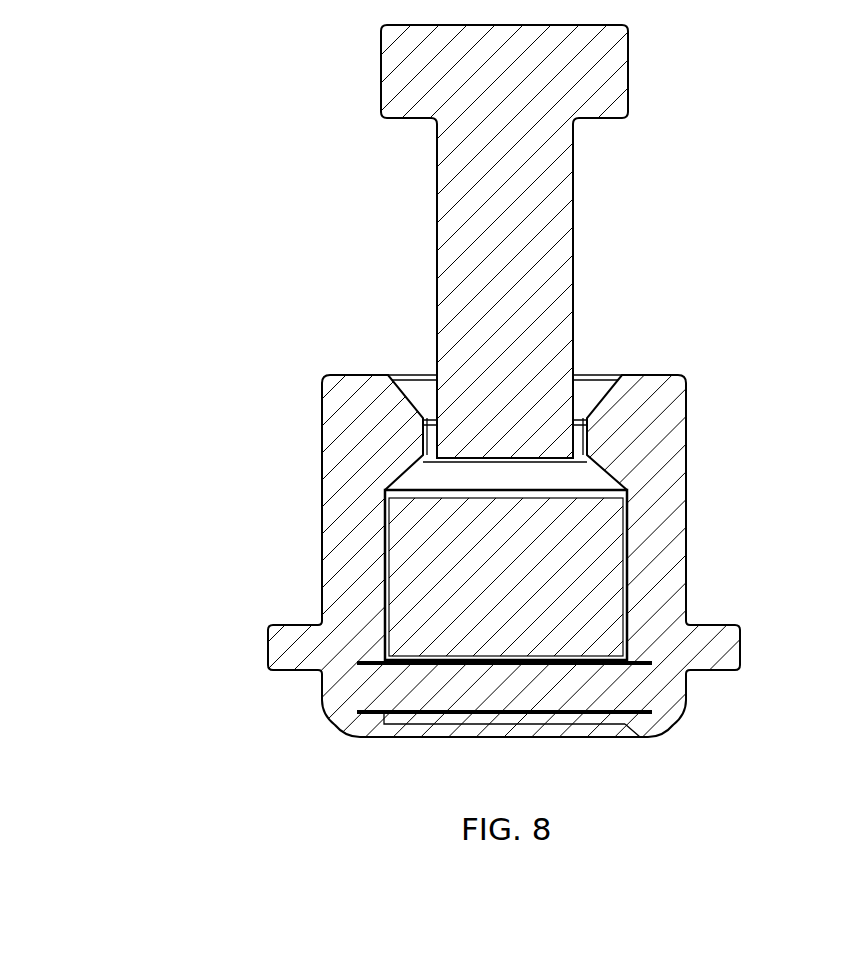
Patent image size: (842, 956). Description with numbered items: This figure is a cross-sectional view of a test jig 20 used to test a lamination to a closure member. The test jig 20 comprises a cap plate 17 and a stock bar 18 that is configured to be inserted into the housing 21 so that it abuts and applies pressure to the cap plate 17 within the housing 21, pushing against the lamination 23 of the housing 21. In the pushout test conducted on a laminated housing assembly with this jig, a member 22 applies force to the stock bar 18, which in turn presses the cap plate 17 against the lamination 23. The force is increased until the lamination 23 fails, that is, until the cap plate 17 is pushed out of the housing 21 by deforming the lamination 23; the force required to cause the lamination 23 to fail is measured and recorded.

The test jig 20 is at (421, 478).
The housing 21 is at (366, 570).
The member 22 is at (487, 405).
The stock bar 18 is at (598, 643).
The cap plate 17 is at (435, 703).
The lamination 23 is at (640, 733).